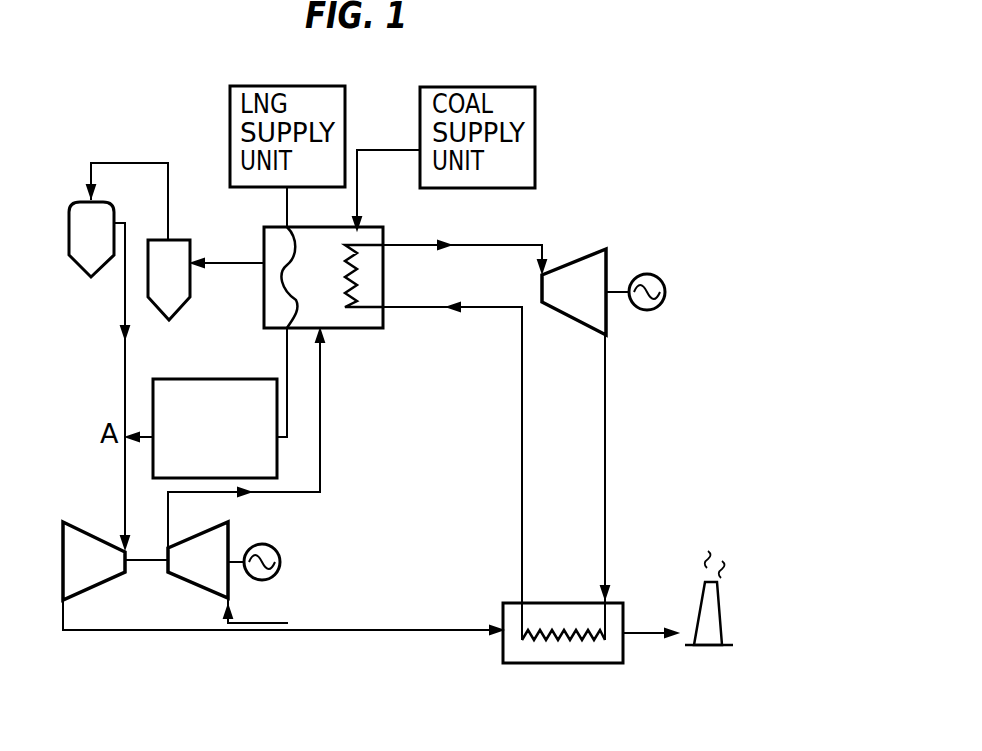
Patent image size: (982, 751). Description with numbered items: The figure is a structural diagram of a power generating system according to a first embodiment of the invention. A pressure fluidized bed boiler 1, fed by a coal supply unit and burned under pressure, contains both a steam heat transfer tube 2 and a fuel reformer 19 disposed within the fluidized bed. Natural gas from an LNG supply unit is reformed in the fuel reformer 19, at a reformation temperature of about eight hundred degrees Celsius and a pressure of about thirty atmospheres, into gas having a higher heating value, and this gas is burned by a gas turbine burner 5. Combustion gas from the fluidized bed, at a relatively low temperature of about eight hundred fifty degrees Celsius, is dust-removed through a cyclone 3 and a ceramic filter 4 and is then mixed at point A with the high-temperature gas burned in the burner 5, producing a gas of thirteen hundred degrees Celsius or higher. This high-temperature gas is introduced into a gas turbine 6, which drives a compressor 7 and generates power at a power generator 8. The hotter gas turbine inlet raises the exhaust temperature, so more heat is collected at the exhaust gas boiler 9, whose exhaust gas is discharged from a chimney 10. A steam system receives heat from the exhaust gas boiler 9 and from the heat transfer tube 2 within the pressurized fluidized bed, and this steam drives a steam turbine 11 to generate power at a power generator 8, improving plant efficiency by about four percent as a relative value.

The pressure fluidized bed boiler 1 is at (372, 227).
The steam heat transfer tube 2 is at (357, 273).
The cyclone 3 is at (187, 303).
The ceramic filter 4 is at (73, 208).
The gas turbine burner 5 is at (235, 379).
The gas turbine 6 is at (80, 523).
The compressor 7 is at (230, 529).
The power generator 8 is at (665, 292).
The exhaust gas boiler 9 is at (580, 664).
The chimney 10 is at (702, 600).
The steam turbine 11 is at (578, 322).
The fuel reformer 19 is at (298, 298).